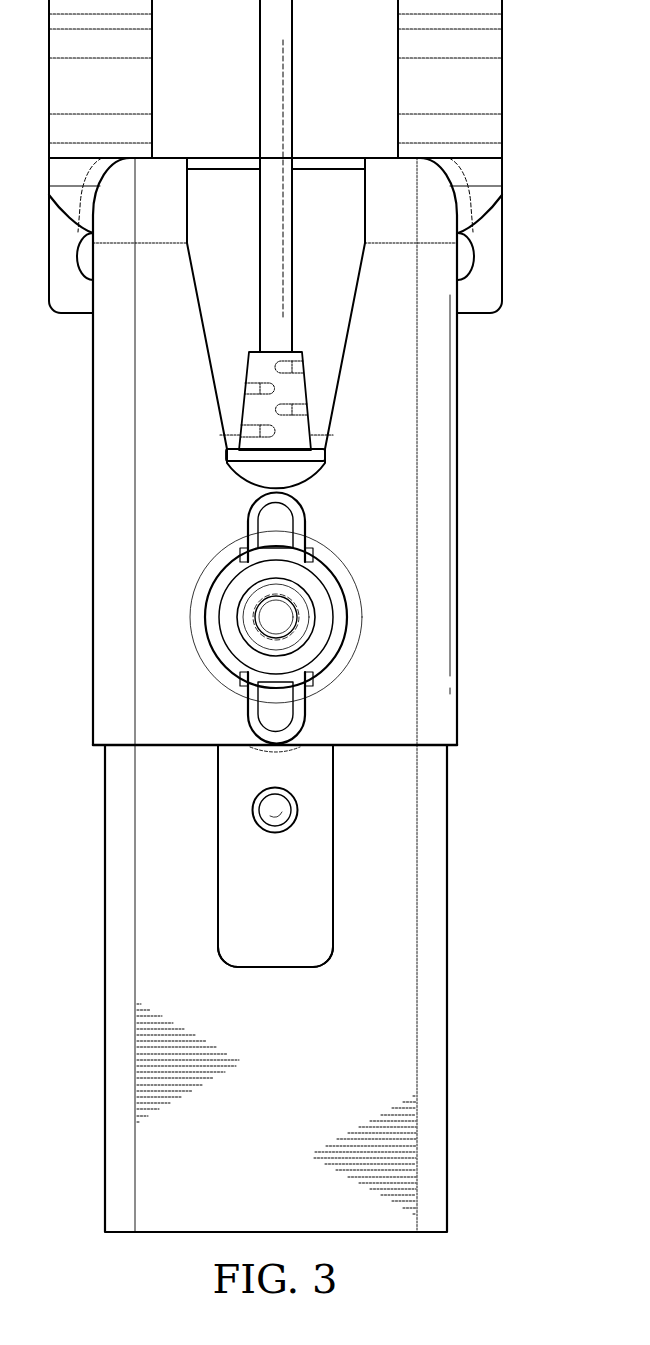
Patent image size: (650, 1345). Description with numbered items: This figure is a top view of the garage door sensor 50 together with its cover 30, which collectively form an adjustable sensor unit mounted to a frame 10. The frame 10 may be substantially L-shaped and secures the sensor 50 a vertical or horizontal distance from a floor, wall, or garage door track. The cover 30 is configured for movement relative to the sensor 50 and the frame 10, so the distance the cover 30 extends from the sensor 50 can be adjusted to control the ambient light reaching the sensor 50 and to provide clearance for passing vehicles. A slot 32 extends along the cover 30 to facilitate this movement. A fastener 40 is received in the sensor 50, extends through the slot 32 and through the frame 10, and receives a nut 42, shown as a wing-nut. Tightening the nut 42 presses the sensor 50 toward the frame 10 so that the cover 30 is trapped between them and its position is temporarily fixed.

The frame 10 is at (459, 500).
The cover 30 is at (438, 1043).
The slot 32 is at (277, 950).
The fastener 40 is at (240, 600).
The nut 42 is at (248, 707).
The garage door sensor 50 is at (325, 868).